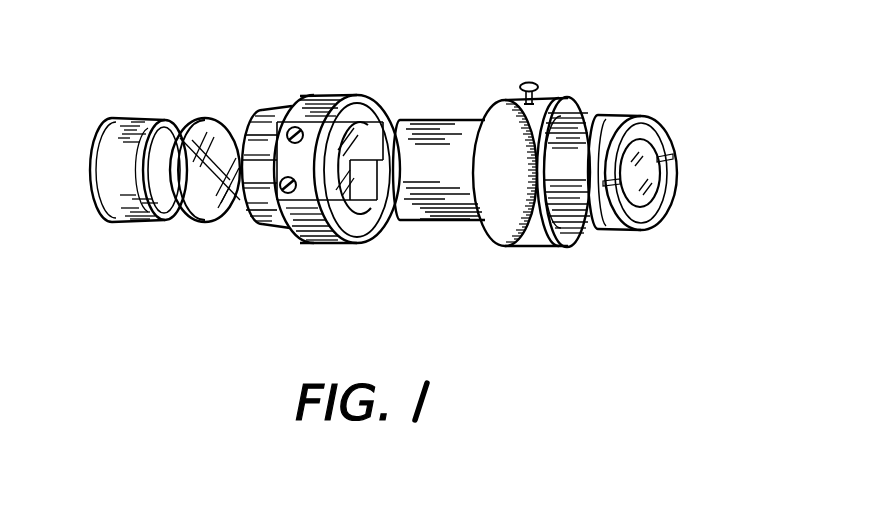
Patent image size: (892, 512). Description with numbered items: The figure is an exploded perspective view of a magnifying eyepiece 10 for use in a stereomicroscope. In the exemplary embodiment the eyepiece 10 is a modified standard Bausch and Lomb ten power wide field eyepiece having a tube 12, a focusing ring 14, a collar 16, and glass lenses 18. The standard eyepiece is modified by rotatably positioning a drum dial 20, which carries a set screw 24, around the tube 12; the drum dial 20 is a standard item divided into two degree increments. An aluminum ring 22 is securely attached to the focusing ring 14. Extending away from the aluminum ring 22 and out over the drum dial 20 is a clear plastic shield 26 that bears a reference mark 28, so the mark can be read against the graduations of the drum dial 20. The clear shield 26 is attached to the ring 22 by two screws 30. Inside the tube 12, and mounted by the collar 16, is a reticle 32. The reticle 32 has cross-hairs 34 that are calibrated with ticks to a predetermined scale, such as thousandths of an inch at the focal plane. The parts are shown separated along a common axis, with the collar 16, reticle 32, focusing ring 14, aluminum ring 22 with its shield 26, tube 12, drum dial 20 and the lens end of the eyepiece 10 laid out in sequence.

The magnifying eyepiece 10 is at (622, 232).
The tube 12 is at (455, 221).
The focusing ring 14 is at (255, 222).
The collar 16 is at (113, 218).
The glass lenses 18 is at (652, 158).
The drum dial 20 is at (578, 246).
The aluminum ring 22 is at (357, 243).
The set screw 24 is at (534, 80).
The clear plastic shield 26 is at (310, 200).
The reference mark 28 is at (360, 163).
The screws 30 is at (290, 183).
The reticle 32 is at (200, 220).
The cross-hairs 34 is at (224, 158).